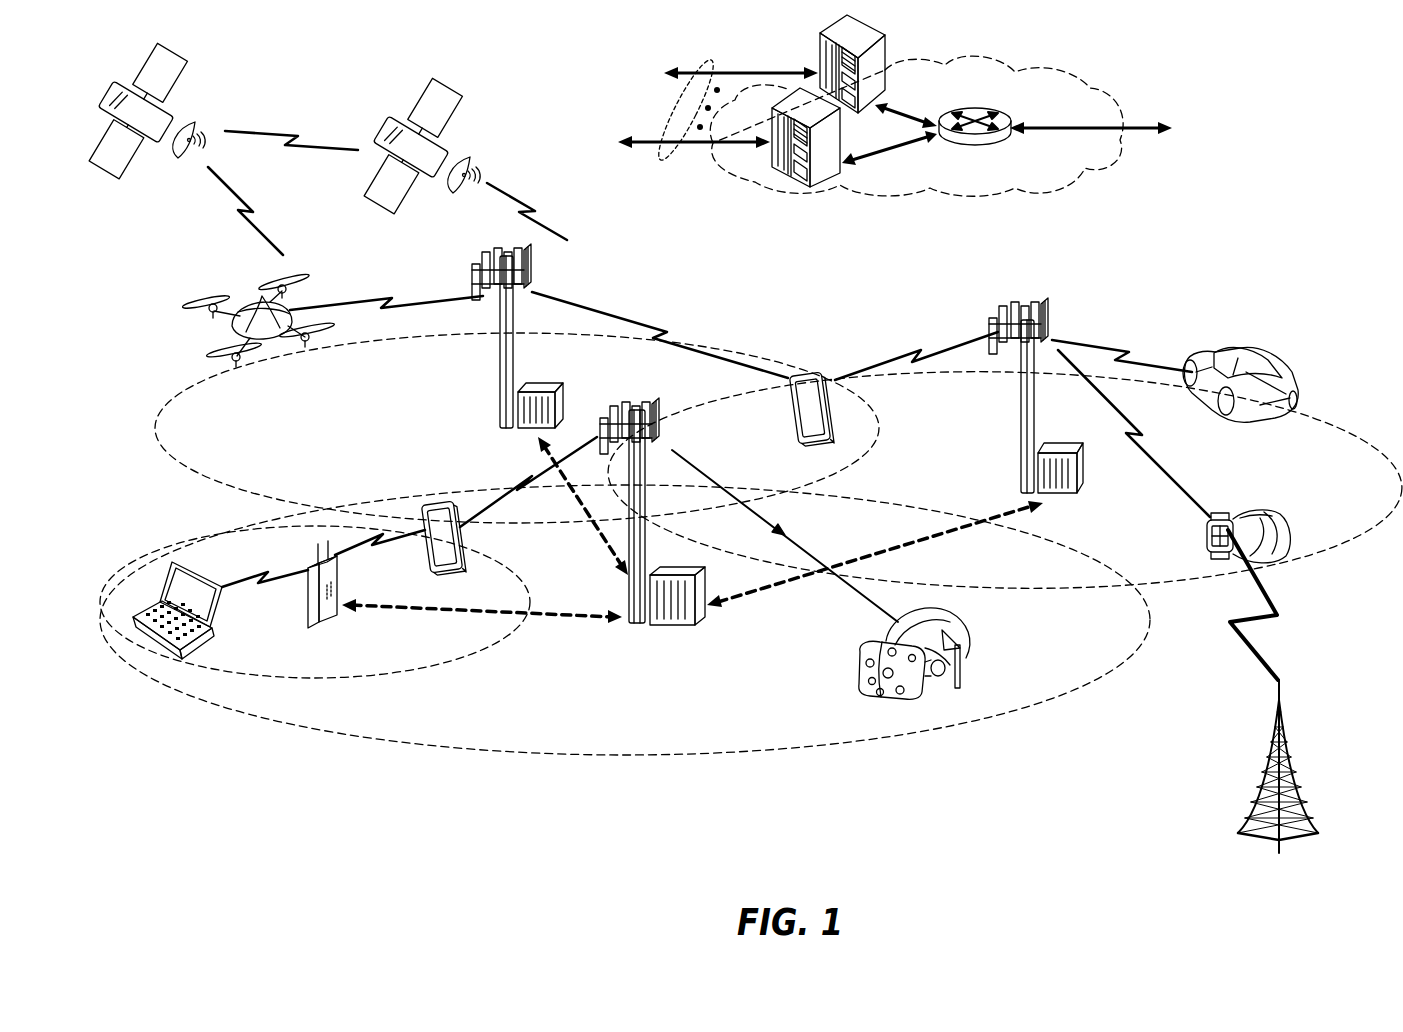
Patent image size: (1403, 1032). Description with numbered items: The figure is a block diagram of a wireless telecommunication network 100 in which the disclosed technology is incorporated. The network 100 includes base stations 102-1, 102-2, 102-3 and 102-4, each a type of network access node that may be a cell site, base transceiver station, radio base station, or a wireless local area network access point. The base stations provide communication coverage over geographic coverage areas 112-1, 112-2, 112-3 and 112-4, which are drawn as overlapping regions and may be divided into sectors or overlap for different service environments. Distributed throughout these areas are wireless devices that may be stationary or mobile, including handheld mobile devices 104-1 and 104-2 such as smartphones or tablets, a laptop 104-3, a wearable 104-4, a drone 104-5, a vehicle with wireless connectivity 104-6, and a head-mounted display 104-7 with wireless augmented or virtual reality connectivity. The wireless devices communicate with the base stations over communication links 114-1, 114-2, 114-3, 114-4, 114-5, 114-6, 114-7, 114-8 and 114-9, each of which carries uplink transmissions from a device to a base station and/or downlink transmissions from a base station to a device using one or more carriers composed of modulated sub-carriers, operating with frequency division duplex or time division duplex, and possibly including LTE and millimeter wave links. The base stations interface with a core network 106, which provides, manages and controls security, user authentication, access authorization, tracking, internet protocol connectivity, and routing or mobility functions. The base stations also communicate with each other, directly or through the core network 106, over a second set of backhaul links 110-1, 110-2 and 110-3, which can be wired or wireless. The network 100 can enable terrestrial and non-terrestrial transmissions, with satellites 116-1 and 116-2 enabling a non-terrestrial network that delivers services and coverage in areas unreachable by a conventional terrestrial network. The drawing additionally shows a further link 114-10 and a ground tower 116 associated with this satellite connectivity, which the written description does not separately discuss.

The wireless telecommunication network 100 is at (1314, 112).
The base station 102-1 is at (636, 626).
The base station 102-2 is at (498, 383).
The base station 102-3 is at (1020, 414).
The base station 102-4 is at (306, 610).
The handheld mobile device 104-1 is at (506, 548).
The handheld mobile device 104-2 is at (790, 414).
The laptop 104-3 is at (152, 650).
The wearable 104-4 is at (1226, 518).
The drone 104-5 is at (268, 346).
The vehicle with wireless connectivity 104-6 is at (1298, 341).
The head-mounted display 104-7 is at (970, 644).
The core network 106 is at (1010, 198).
The backhaul link 110-1 is at (380, 607).
The backhaul link 110-2 is at (942, 535).
The backhaul link 110-3 is at (600, 538).
The coverage area 112-1 is at (563, 757).
The coverage area 112-2 is at (450, 667).
The coverage area 112-3 is at (218, 488).
The coverage area 112-4 is at (1317, 412).
The communication link 114-1 is at (796, 531).
The communication link 114-2 is at (524, 480).
The communication link 114-3 is at (237, 582).
The communication link 114-4 is at (380, 548).
The communication link 114-5 is at (388, 300).
The communication link 114-6 is at (913, 355).
The communication link 114-7 is at (665, 333).
The communication link 114-8 is at (1150, 444).
The communication link 114-9 is at (1120, 354).
The communication link 114-10 is at (1258, 622).
The satellite ground station tower 116 is at (1292, 752).
The satellite 116-1 is at (196, 120).
The satellite 116-2 is at (474, 156).